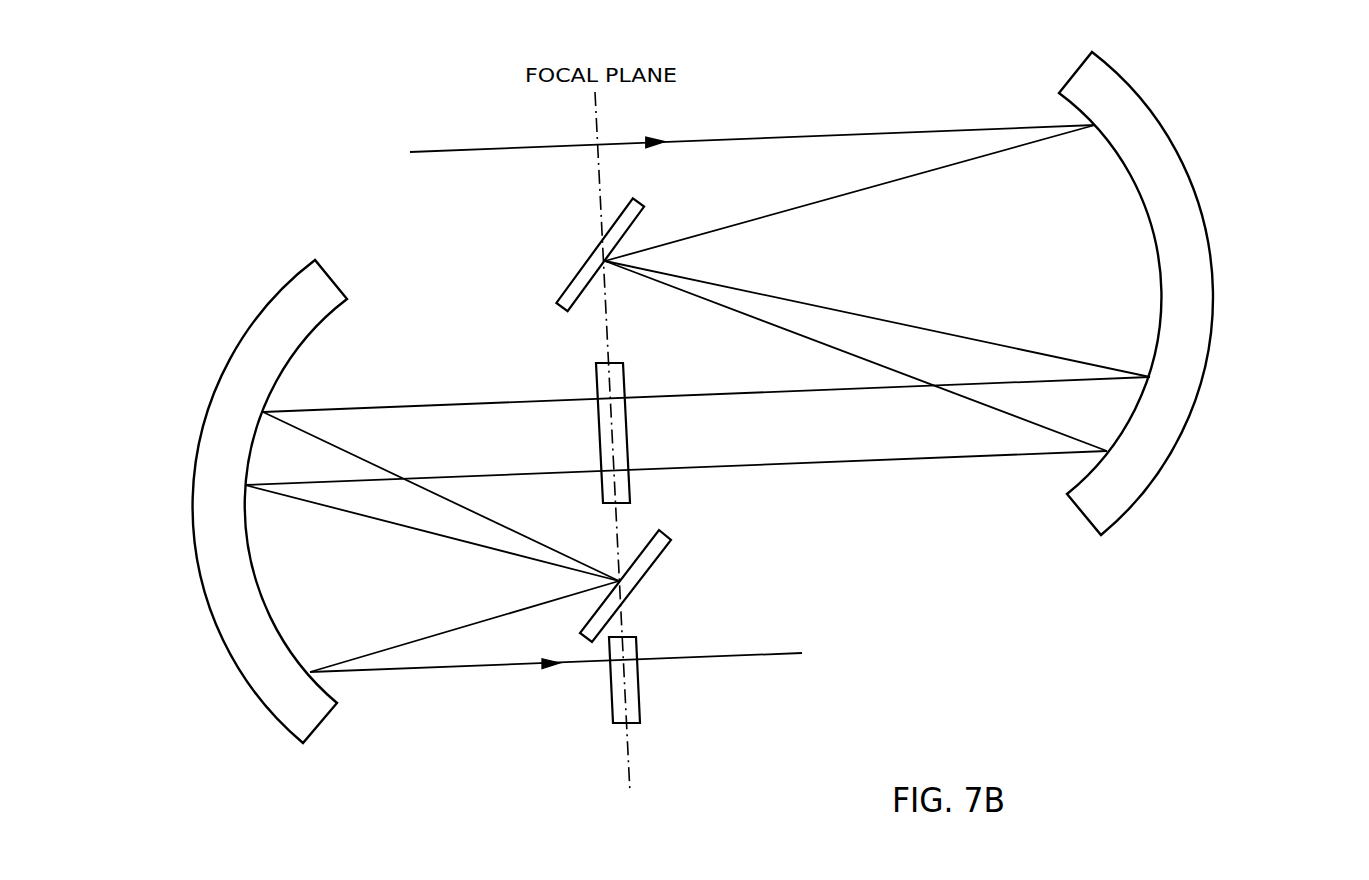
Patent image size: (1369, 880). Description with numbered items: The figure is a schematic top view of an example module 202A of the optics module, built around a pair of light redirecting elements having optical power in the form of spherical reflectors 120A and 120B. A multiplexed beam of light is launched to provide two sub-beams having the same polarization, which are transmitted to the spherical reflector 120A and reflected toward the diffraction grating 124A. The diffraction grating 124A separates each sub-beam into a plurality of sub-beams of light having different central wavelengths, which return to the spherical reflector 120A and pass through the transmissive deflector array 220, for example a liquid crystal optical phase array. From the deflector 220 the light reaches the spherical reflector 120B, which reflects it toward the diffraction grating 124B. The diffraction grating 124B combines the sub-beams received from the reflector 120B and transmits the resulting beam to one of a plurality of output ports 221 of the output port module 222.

The module 202A is at (1207, 128).
The spherical reflector 120A is at (1212, 250).
The spherical reflector 120B is at (280, 286).
The diffraction grating 124A is at (572, 272).
The diffraction grating 124B is at (667, 548).
The transmissive deflector array 220 is at (626, 415).
The output port 221 is at (788, 655).
The output port module 222 is at (610, 710).